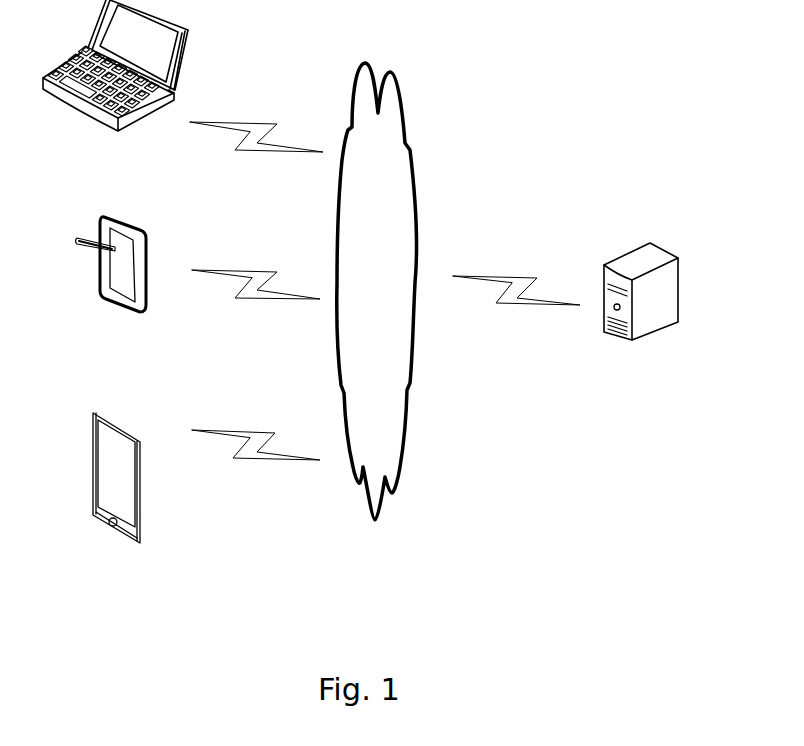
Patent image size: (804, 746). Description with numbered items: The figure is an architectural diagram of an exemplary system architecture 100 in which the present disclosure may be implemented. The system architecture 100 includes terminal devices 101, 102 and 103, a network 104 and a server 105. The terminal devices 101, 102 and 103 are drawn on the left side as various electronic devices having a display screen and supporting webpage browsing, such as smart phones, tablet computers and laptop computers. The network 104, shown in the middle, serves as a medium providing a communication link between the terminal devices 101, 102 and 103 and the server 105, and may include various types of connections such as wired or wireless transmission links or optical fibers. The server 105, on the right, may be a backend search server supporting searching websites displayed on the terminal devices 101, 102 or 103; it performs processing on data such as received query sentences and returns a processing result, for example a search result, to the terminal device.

The system architecture 100 is at (671, 41).
The terminal device 101 is at (116, 500).
The terminal device 102 is at (111, 286).
The terminal device 103 is at (115, 86).
The network 104 is at (377, 291).
The server 105 is at (641, 318).